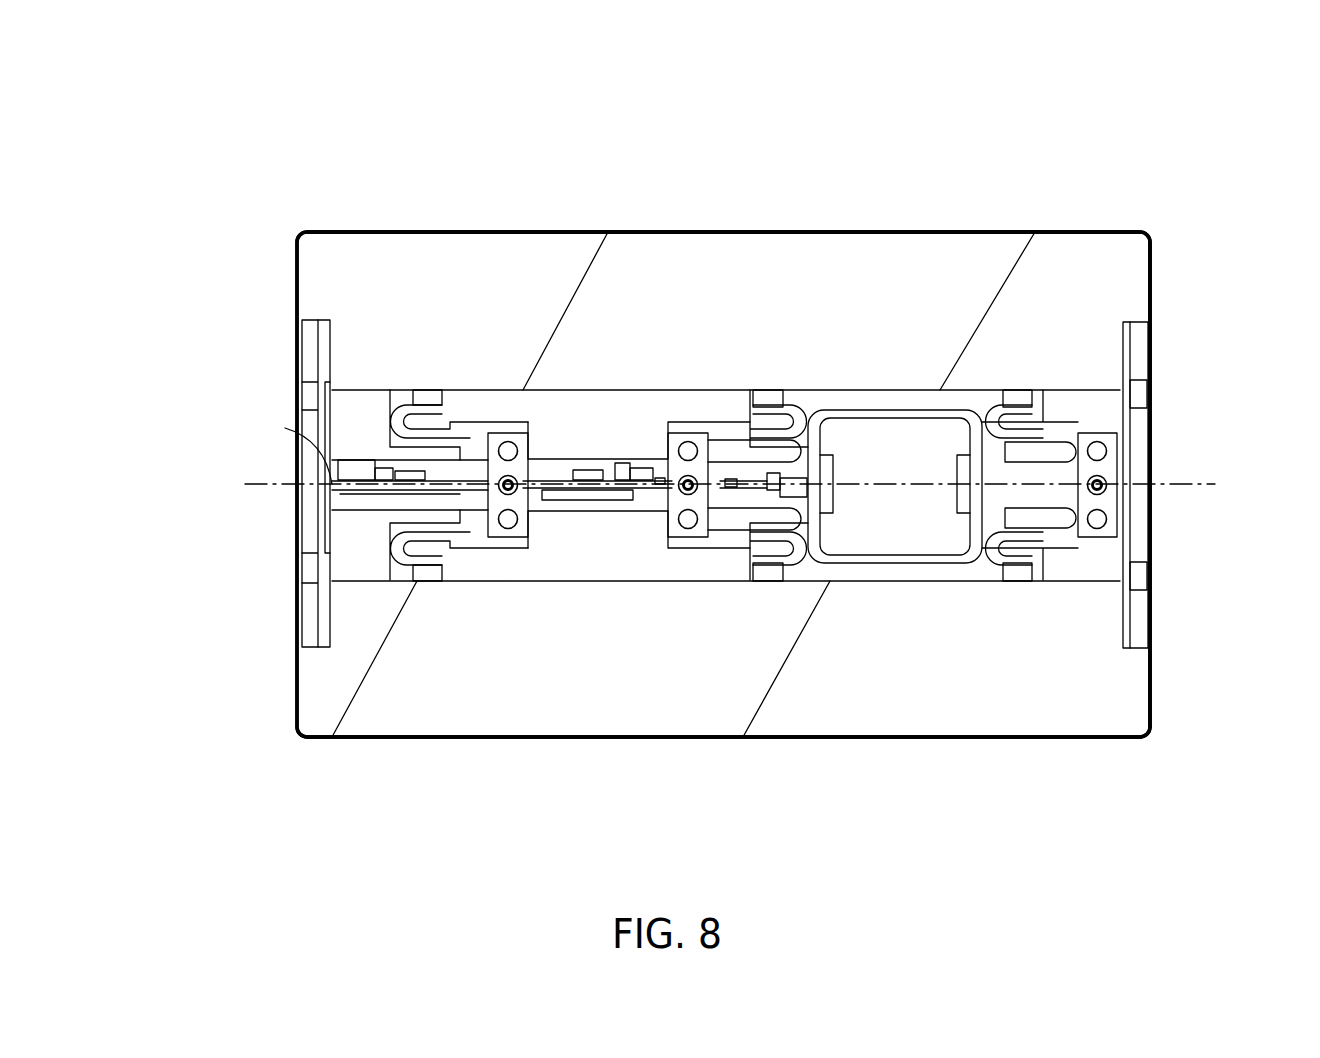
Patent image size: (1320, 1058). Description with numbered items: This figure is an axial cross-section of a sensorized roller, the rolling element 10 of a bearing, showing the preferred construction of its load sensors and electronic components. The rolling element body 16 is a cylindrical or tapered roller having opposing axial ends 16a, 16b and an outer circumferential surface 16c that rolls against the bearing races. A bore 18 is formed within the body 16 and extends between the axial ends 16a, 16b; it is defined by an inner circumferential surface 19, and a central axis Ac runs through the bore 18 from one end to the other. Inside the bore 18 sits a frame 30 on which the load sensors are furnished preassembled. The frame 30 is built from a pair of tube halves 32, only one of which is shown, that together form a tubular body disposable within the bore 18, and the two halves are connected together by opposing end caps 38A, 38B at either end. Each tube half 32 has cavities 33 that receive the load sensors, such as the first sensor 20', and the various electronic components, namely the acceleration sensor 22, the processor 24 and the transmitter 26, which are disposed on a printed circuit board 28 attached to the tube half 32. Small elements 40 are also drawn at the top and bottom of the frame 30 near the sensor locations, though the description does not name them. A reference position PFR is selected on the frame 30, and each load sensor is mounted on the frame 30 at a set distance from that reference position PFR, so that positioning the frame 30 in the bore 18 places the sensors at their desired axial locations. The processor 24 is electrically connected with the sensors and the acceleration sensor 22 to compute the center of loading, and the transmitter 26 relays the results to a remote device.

The rolling element 10 is at (330, 103).
The rolling element body 16 is at (290, 699).
The axial end 16a is at (297, 261).
The axial end 16b is at (1149, 683).
The outer circumferential surface 16c is at (977, 738).
The bore 18 is at (567, 553).
The inner circumferential surface 19 is at (888, 392).
The first load sensor 20' is at (459, 531).
The acceleration sensor 22 is at (588, 466).
The processor 24 is at (624, 456).
The transmitter 26 is at (351, 457).
The printed circuit board 28 is at (372, 490).
The frame 30 is at (612, 386).
The tube half 32 is at (625, 570).
The cavity 33 is at (473, 453).
The end cap 38A is at (300, 608).
The end cap 38B is at (1143, 353).
The connector block 40 is at (432, 386).
The central axis Ac is at (1200, 487).
The frame reference position PFR is at (289, 452).